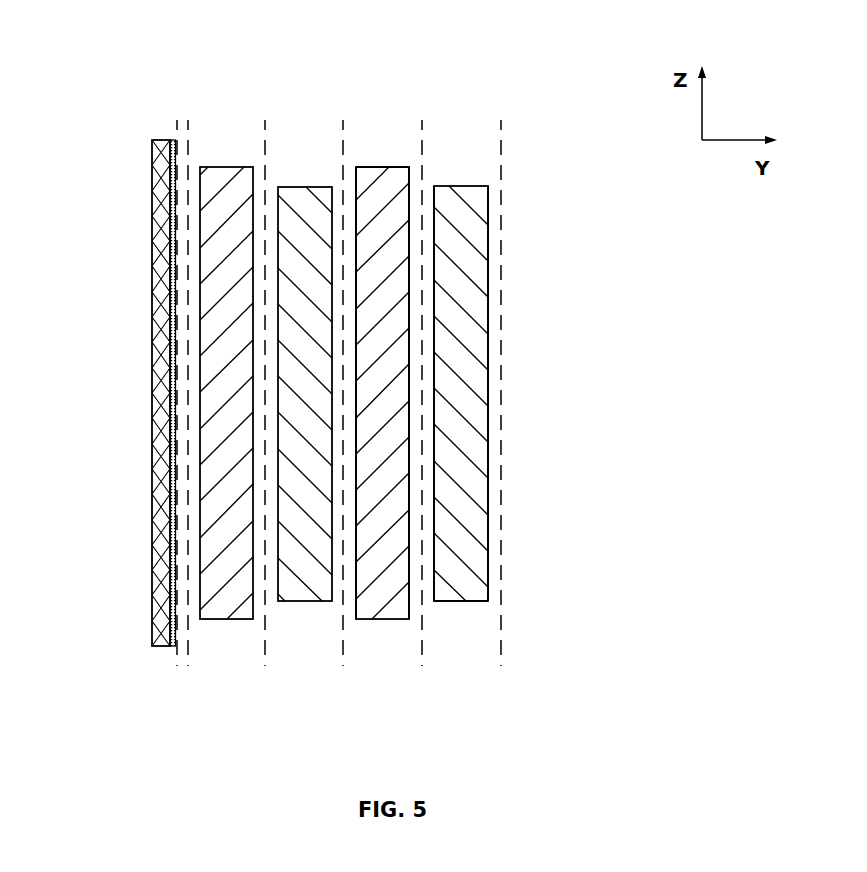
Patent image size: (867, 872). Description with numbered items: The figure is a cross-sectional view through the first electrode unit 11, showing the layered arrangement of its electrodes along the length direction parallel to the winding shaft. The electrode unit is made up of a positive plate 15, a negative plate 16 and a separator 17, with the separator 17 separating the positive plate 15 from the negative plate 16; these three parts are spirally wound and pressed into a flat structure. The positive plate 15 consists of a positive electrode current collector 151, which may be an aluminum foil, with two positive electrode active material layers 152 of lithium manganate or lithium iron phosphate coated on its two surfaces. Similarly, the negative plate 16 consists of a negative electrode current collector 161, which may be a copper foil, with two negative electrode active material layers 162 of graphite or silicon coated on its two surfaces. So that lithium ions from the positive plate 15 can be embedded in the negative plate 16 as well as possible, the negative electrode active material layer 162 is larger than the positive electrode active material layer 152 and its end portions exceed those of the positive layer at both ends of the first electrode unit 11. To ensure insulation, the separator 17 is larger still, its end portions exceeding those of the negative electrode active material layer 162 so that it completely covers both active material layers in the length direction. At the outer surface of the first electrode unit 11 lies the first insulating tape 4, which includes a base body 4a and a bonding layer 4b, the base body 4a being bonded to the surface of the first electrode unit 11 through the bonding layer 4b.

The first insulating tape 4 is at (73, 287).
The base body 4a is at (172, 347).
The bonding layer 4b is at (158, 295).
The first electrode unit 11 is at (638, 398).
The positive plate 15 is at (473, 446).
The positive electrode current collector 151 is at (459, 600).
The positive electrode active material layer 152 is at (432, 574).
The negative plate 16 is at (399, 397).
The negative electrode current collector 161 is at (382, 167).
The negative electrode active material layer 162 is at (408, 172).
The separator 17 is at (500, 272).